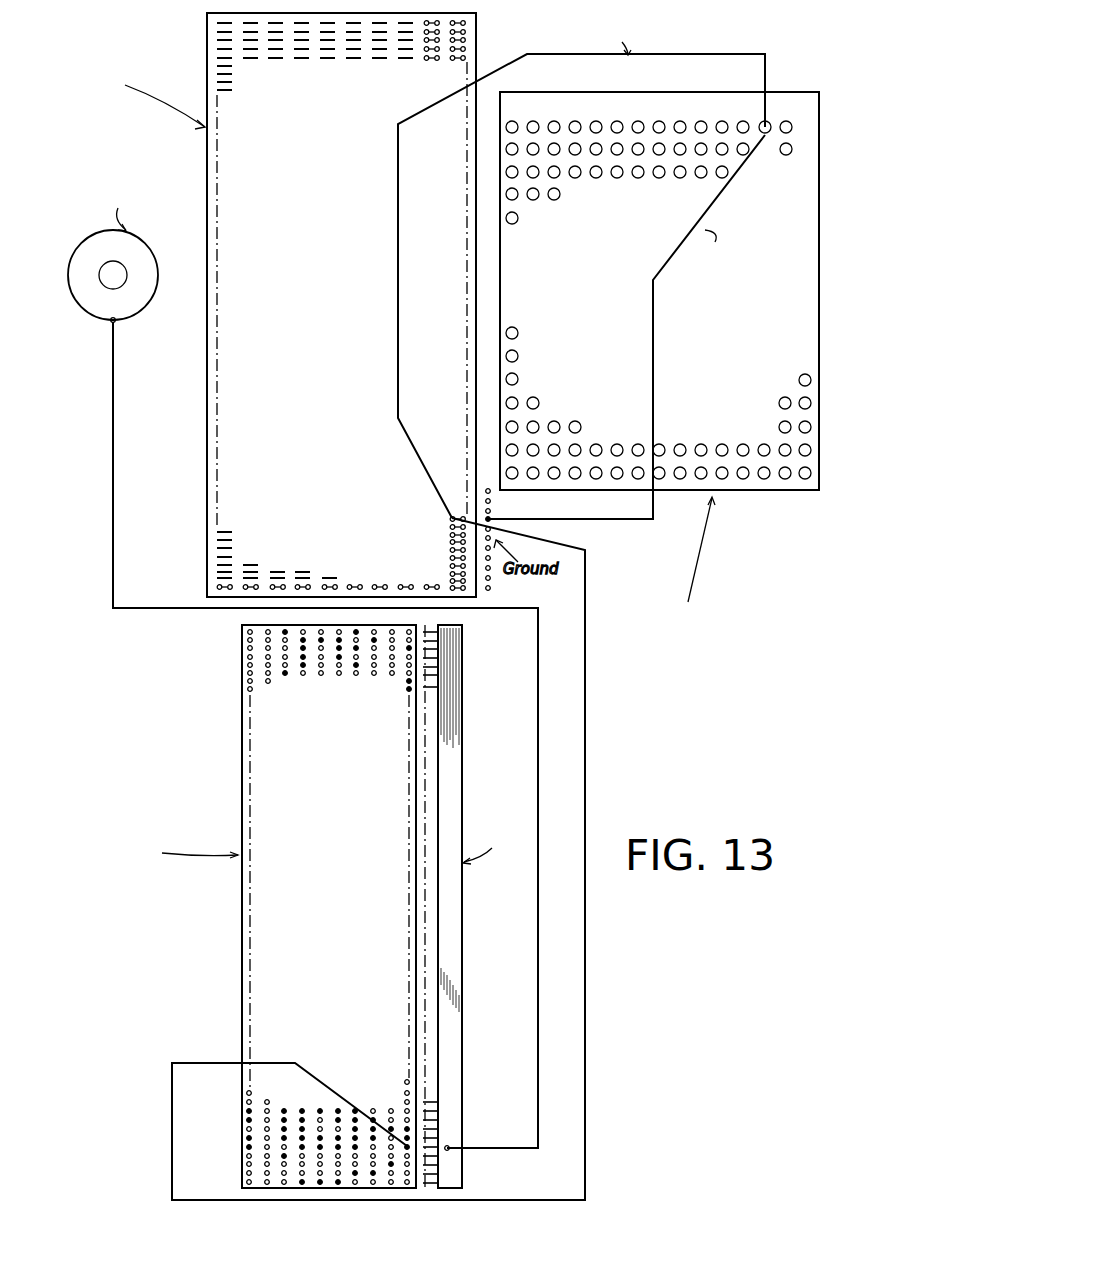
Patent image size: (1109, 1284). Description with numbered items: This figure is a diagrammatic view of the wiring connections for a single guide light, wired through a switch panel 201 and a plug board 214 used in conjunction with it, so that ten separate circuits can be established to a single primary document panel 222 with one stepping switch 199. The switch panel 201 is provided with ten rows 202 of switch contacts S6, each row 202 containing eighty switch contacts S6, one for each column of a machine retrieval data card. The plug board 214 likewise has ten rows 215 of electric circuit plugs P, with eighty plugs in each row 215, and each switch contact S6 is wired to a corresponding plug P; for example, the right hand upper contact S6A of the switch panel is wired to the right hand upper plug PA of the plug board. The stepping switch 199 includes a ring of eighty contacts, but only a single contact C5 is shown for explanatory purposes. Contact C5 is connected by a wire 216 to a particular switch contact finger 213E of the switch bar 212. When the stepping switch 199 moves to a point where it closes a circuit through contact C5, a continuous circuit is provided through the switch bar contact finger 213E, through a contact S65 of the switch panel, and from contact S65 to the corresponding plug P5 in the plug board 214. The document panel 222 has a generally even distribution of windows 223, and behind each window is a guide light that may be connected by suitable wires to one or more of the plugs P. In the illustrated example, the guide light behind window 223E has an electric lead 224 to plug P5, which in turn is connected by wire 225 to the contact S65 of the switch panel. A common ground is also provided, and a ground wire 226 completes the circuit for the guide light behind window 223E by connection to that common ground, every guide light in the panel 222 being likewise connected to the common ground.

The plug board 214 is at (206, 47).
The rows of electric circuit plugs 215 is at (216, 24).
The electric circuit plug P is at (230, 80).
The right hand upper plug PA is at (466, 20).
The electric lead 224 is at (698, 52).
The primary document panel 222 is at (794, 88).
The windows 223 is at (662, 179).
The window 223E is at (764, 122).
The ground wire 226 is at (718, 210).
The stepping switch 199 is at (78, 304).
The contact C5 is at (110, 322).
The wire 216 is at (112, 505).
The plug P5 is at (455, 515).
The switch panel 201 is at (238, 757).
The rows of switch contacts 202 is at (248, 632).
The switch contact S6 is at (247, 633).
The right hand upper switch contact S6A is at (410, 630).
The switch bar 212 is at (456, 752).
The wire 225 is at (587, 733).
The switch contact S65 is at (407, 1138).
The switch contact finger 213E is at (447, 1146).